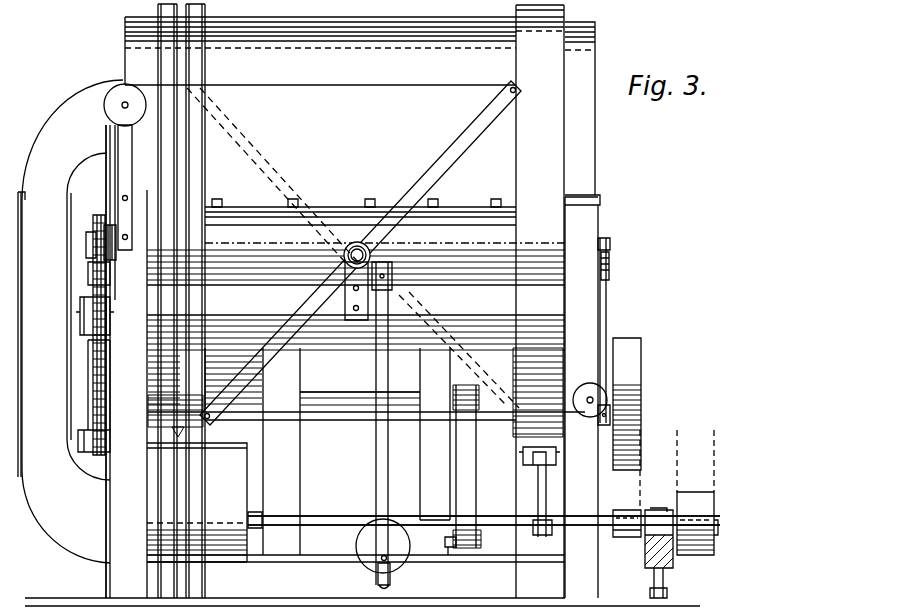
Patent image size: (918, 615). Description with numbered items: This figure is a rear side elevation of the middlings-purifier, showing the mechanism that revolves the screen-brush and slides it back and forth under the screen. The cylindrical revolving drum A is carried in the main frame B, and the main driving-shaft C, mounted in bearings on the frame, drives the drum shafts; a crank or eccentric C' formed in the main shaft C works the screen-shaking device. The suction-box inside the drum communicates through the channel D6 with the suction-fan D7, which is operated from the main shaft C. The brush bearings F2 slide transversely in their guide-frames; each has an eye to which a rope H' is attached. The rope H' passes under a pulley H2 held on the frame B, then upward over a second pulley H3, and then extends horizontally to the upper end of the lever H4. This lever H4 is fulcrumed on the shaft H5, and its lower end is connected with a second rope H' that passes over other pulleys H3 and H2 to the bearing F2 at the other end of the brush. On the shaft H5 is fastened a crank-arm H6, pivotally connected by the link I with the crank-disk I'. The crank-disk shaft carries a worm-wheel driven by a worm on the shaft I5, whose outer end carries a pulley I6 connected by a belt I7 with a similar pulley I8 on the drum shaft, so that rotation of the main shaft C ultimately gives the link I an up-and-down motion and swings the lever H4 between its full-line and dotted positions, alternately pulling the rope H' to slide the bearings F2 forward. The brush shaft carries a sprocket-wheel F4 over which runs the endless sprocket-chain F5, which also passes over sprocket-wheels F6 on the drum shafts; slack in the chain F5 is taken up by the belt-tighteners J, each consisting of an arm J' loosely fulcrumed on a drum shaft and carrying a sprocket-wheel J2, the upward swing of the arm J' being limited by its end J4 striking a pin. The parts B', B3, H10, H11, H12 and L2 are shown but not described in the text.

The revolving drum A is at (320, 42).
The main frame B is at (356, 300).
The frame upright B' is at (214, 379).
The frame cross bar B3 is at (334, 398).
The main driving-shaft C is at (484, 510).
The crank or eccentric C' is at (396, 536).
The channel D6 is at (47, 133).
The suction-fan D7 is at (197, 502).
The bearings F2 is at (106, 230).
The sprocket-wheel F4 is at (90, 247).
The endless sprocket-chain F5 is at (92, 280).
The sprocket-wheels F6 is at (104, 410).
The rope H' is at (347, 341).
The pulley H2 is at (610, 274).
The second pulley H3 is at (110, 93).
The lever H4 is at (425, 172).
The shaft H5 is at (346, 255).
The crank-arm H6 is at (385, 260).
The gear drum H10 is at (548, 444).
The bearing bracket H11 is at (556, 458).
The connecting rod H12 is at (538, 492).
The link I is at (366, 425).
The crank-disk I' is at (364, 546).
The shaft I5 is at (452, 557).
The pulley I6 is at (481, 545).
The belt I7 is at (470, 487).
The pulley I8 is at (478, 415).
The belt-tighteners J is at (70, 335).
The arm J' is at (72, 385).
The sprocket-wheel J2 is at (85, 322).
The end of lever J4 is at (95, 434).
The guide loop L2 is at (95, 172).